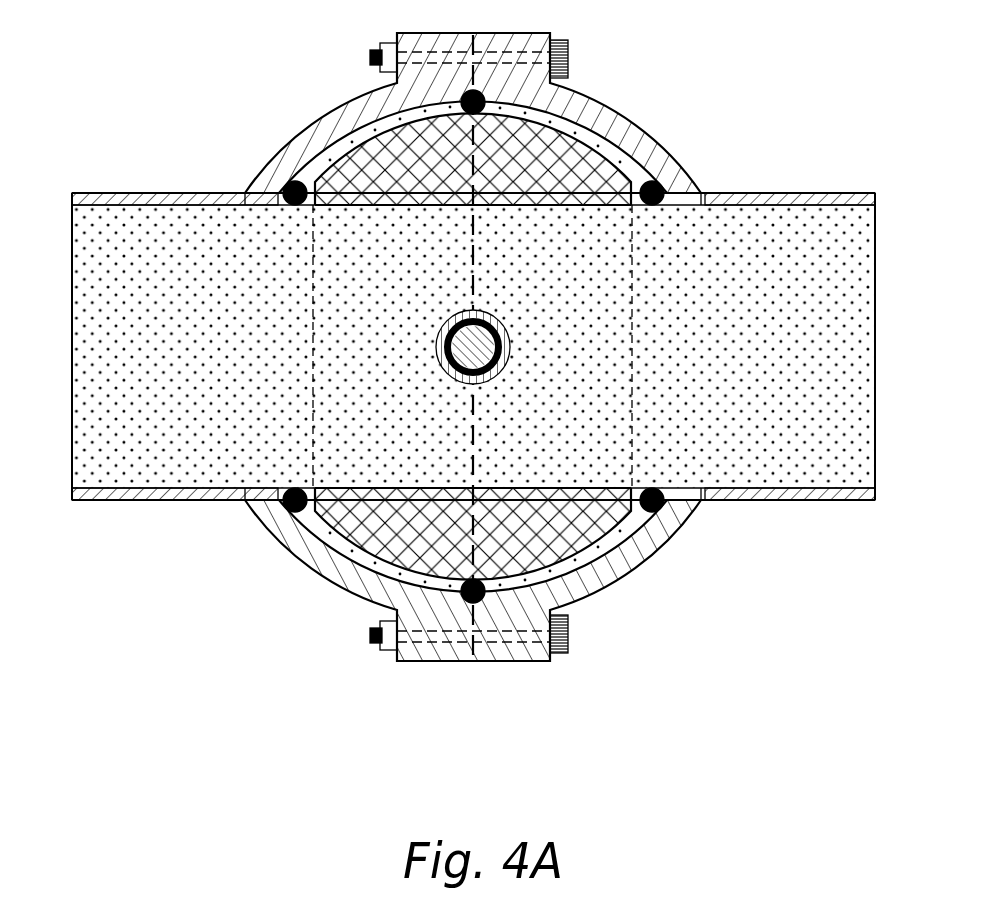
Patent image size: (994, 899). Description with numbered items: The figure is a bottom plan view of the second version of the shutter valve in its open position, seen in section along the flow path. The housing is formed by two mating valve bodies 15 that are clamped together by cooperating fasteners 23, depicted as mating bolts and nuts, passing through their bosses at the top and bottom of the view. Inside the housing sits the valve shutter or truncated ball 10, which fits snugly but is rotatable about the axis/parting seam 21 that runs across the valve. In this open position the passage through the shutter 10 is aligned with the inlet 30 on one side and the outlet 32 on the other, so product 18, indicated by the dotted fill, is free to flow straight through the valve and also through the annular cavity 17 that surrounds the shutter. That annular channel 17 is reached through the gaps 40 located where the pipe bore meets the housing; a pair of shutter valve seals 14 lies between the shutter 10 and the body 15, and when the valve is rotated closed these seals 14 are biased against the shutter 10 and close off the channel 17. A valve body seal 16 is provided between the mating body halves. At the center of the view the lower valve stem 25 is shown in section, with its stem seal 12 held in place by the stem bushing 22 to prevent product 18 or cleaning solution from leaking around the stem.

The valve shutter 10 is at (407, 173).
The stem seal 12 is at (445, 350).
The shutter valve seals 14 is at (295, 178).
The valve body 15 is at (648, 148).
The valve body seal 16 is at (470, 600).
The annular cavity 17 is at (608, 158).
The product 18 is at (743, 307).
The axis/parting seam 21 is at (473, 535).
The stem bushing 22 is at (448, 308).
The fasteners 23 is at (570, 63).
The lower valve stem 25 is at (445, 377).
The inlet 30 is at (72, 247).
The outlet 32 is at (878, 313).
The gaps 40 is at (306, 208).